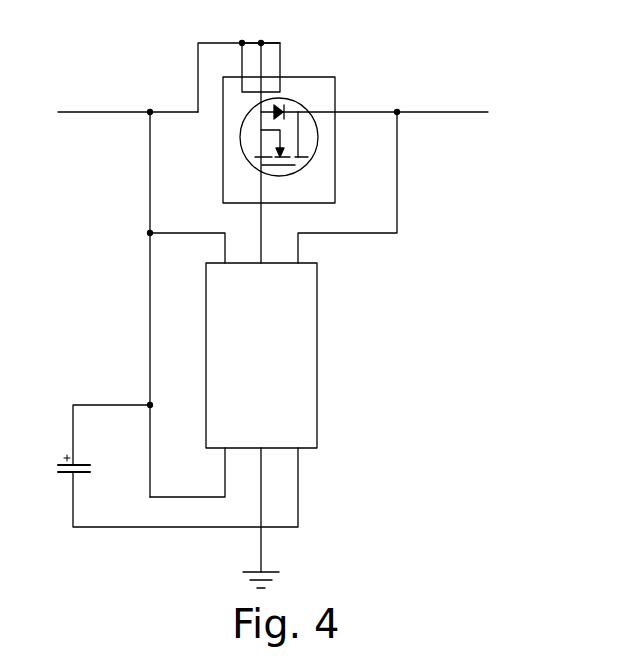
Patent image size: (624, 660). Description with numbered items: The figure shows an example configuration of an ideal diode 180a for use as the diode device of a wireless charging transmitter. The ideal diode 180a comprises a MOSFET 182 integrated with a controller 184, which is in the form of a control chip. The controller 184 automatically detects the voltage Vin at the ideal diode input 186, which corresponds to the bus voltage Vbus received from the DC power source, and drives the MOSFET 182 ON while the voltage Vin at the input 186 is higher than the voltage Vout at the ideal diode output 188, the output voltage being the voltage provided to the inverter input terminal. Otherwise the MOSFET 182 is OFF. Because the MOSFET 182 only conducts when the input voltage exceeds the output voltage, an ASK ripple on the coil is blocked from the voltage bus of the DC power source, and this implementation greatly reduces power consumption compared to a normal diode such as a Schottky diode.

The ideal diode 180a is at (503, 413).
The MOSFET 182 is at (333, 150).
The controller 184 is at (330, 410).
The ideal diode input 186 is at (83, 114).
The ideal diode output 188 is at (483, 116).